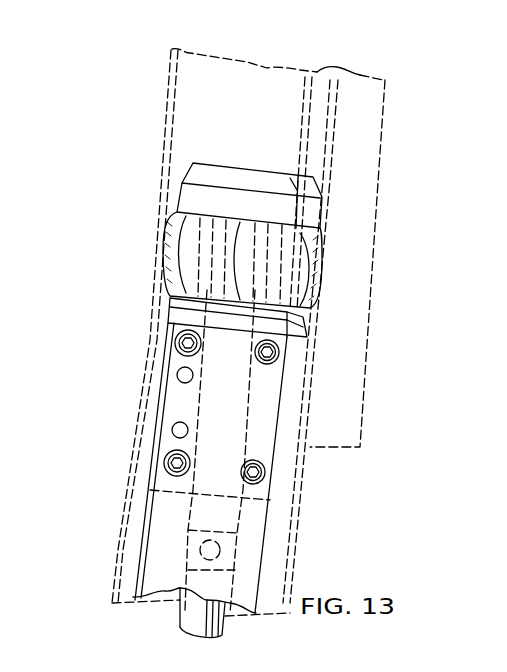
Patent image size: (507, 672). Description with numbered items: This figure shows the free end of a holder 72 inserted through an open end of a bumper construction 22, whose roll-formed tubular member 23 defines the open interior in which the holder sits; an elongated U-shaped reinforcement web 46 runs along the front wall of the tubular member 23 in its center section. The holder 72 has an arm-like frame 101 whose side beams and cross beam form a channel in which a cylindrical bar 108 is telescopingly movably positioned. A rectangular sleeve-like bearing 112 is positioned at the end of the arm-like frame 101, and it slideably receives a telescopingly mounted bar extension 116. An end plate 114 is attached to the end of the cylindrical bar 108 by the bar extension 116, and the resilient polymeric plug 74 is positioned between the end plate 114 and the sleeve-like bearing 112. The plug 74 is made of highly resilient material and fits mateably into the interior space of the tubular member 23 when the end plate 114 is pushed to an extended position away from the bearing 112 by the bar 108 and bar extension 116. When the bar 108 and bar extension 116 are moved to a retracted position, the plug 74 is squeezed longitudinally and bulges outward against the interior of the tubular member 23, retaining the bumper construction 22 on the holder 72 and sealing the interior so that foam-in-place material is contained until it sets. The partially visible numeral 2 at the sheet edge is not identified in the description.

The partially visible numeral 2 is at (2, 369).
The bumper construction 22 is at (337, 62).
The tubular member 23 is at (255, 63).
The reinforcement web 46 is at (377, 281).
The holder 72 is at (84, 103).
The plug 74 is at (173, 257).
The arm-like frame 101 is at (140, 534).
The cylindrical bar 108 is at (180, 627).
The sleeve-like bearing 112 is at (262, 443).
The end plate 114 is at (200, 160).
The bar extension 116 is at (200, 397).